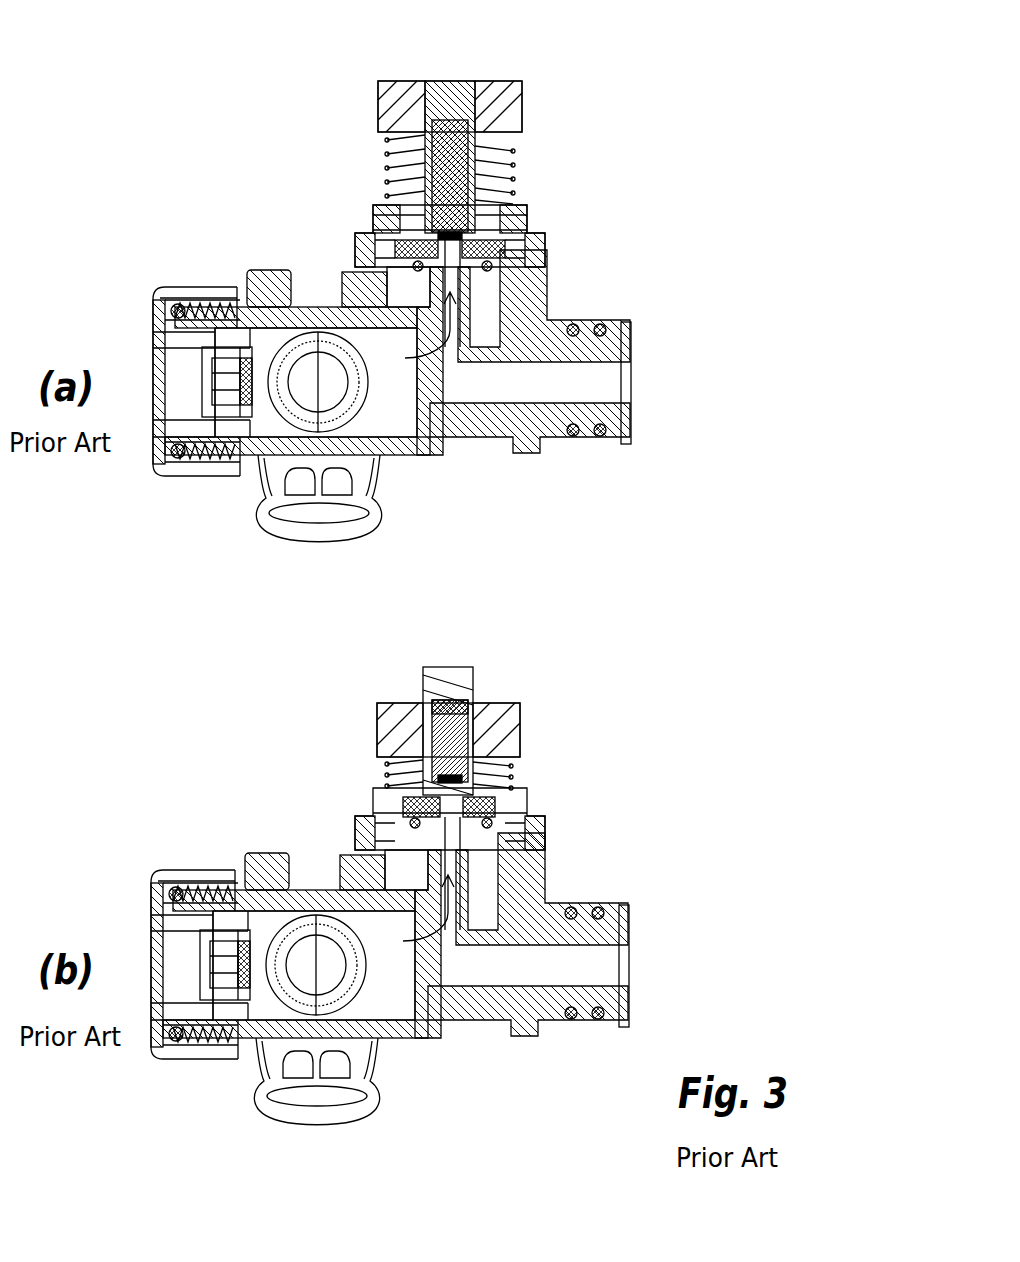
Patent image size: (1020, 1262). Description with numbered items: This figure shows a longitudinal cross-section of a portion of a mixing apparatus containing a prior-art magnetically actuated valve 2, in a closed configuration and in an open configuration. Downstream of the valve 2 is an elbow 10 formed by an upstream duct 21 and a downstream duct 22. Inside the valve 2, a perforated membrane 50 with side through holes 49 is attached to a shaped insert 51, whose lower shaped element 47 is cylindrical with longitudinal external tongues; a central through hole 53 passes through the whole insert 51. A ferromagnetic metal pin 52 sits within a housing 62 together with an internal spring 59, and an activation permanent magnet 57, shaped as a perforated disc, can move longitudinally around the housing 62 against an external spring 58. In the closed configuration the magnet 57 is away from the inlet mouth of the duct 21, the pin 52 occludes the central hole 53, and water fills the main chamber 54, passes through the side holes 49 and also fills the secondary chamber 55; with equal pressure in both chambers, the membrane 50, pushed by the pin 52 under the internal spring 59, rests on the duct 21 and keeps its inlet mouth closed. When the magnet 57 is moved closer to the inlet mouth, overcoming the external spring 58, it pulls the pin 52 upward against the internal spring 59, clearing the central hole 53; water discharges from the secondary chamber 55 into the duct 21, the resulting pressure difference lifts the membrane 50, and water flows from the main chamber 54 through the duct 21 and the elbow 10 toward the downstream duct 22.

The magnetically actuated valve 2 is at (643, 115).
The elbow 10 is at (459, 395).
The upstream duct 21 is at (480, 330).
The downstream duct 22 is at (551, 397).
The lower shaped element 47 is at (437, 282).
The side through holes 49 is at (417, 272).
The perforated membrane 50 is at (420, 268).
The shaped insert 51 is at (500, 246).
The ferromagnetic metal pin 52 is at (448, 188).
The central through hole 53 is at (271, 340).
The main chamber 54 is at (240, 310).
The secondary chamber 55 is at (498, 226).
The activation permanent magnet 57 is at (487, 97).
The external spring 58 is at (387, 148).
The internal spring 59 is at (445, 127).
The housing 62 is at (463, 107).